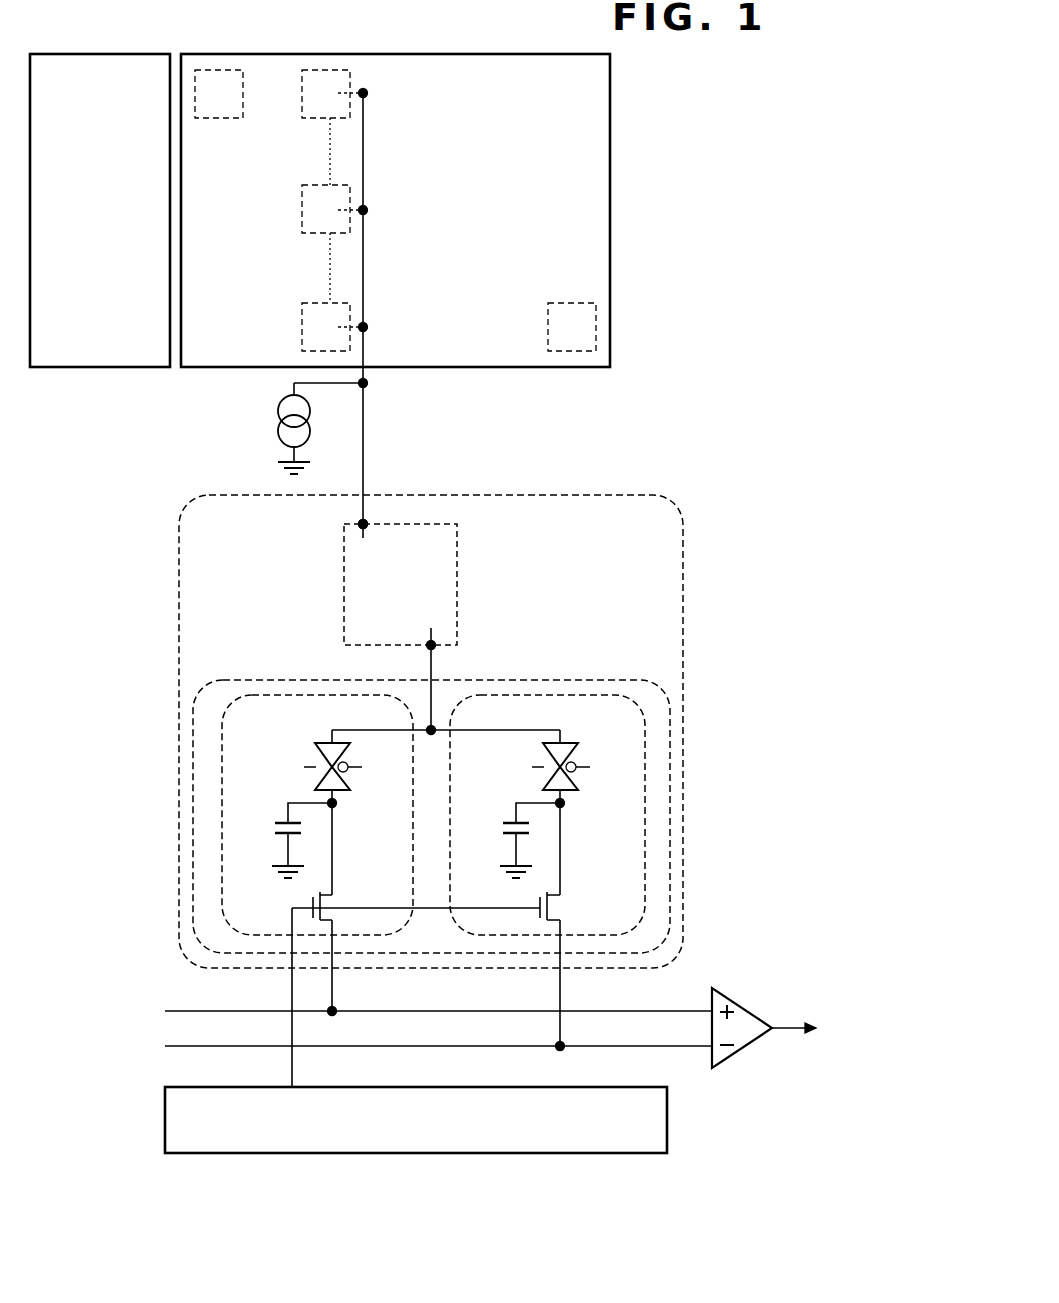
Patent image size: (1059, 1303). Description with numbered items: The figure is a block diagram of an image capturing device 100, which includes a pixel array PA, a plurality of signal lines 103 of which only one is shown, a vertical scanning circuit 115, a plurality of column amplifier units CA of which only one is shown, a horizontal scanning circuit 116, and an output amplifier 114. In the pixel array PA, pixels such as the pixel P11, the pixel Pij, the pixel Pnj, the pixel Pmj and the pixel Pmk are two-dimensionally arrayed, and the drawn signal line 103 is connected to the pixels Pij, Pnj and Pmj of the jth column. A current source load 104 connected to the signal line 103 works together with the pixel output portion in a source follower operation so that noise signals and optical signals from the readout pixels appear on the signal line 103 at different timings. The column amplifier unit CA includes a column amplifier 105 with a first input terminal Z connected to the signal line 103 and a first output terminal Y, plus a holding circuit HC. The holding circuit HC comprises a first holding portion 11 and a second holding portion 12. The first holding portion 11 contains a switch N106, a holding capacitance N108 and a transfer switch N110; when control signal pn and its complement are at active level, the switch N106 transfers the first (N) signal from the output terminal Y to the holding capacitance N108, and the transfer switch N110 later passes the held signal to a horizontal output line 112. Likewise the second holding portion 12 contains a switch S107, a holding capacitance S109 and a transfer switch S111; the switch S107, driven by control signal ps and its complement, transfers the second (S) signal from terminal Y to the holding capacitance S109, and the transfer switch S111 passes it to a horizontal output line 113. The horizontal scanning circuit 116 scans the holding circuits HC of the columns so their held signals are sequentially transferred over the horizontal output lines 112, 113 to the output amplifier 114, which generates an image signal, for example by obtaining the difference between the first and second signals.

The image capturing device 100 is at (140, 1143).
The signal line 103 is at (372, 412).
The current source load 104 is at (277, 425).
The column amplifier 105 is at (458, 533).
The first holding portion 11 is at (262, 695).
The second holding portion 12 is at (548, 695).
The horizontal output line 112 is at (675, 1000).
The horizontal output line 113 is at (659, 1055).
The output amplifier 114 is at (744, 1013).
The vertical scanning circuit 115 is at (146, 54).
The horizontal scanning circuit 116 is at (667, 1120).
The switch N106 is at (320, 744).
The holding capacitance N108 is at (278, 818).
The transfer switch N110 is at (328, 902).
The switch S107 is at (564, 744).
The holding capacitance S109 is at (506, 818).
The transfer switch S111 is at (566, 910).
The pixel array PA is at (510, 54).
The column amplifier unit CA is at (684, 530).
The holding circuit HC is at (617, 680).
The pixel P11 is at (222, 70).
The pixel Pij is at (302, 106).
The pixel Pnj is at (302, 222).
The pixel Pmj is at (302, 340).
The pixel Pmk is at (548, 340).
The first input terminal Z is at (366, 524).
The first output terminal Y is at (434, 647).
The control signal pn is at (296, 767).
The control signal ps is at (522, 767).